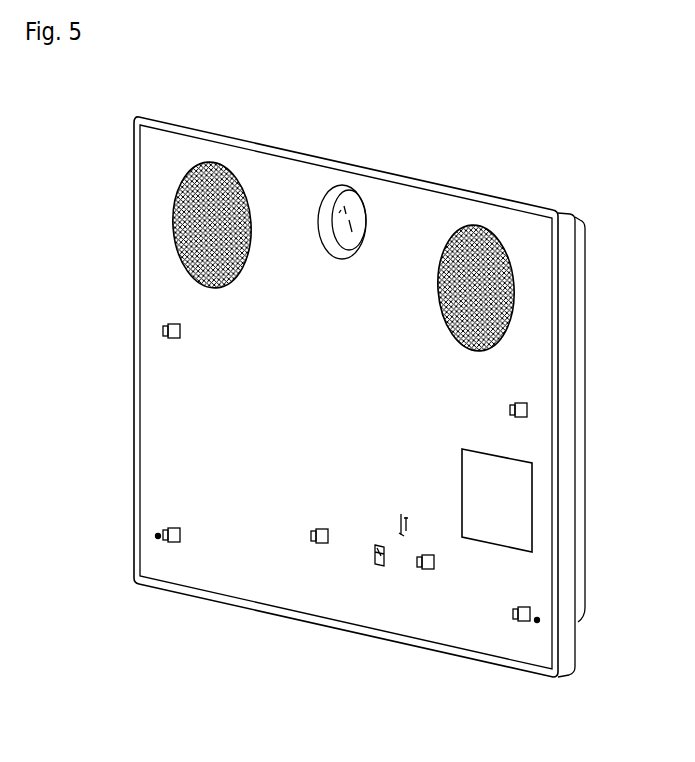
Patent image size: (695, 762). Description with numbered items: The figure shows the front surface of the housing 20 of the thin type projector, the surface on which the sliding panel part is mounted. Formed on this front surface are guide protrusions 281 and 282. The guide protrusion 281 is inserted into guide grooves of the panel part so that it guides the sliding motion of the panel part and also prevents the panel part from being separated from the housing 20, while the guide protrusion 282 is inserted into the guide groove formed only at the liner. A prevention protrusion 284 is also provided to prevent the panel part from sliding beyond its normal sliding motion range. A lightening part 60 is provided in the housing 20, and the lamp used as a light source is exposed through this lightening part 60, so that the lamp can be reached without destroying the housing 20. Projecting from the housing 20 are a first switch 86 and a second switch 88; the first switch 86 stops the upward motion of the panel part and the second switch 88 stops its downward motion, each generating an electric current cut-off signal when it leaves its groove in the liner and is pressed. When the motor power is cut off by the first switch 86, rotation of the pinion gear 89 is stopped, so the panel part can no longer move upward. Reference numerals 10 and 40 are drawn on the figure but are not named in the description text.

The display unit 10 is at (348, 203).
The housing 20 is at (563, 286).
The speaker grille 40 is at (172, 210).
The lightening part 60 is at (523, 505).
The first switch 86 is at (408, 523).
The second switch 88 is at (401, 528).
The pinion gear 89 is at (375, 567).
The guide protrusion 281 is at (163, 331).
The guide protrusion 282 is at (308, 545).
The prevention protrusion 284 is at (155, 536).